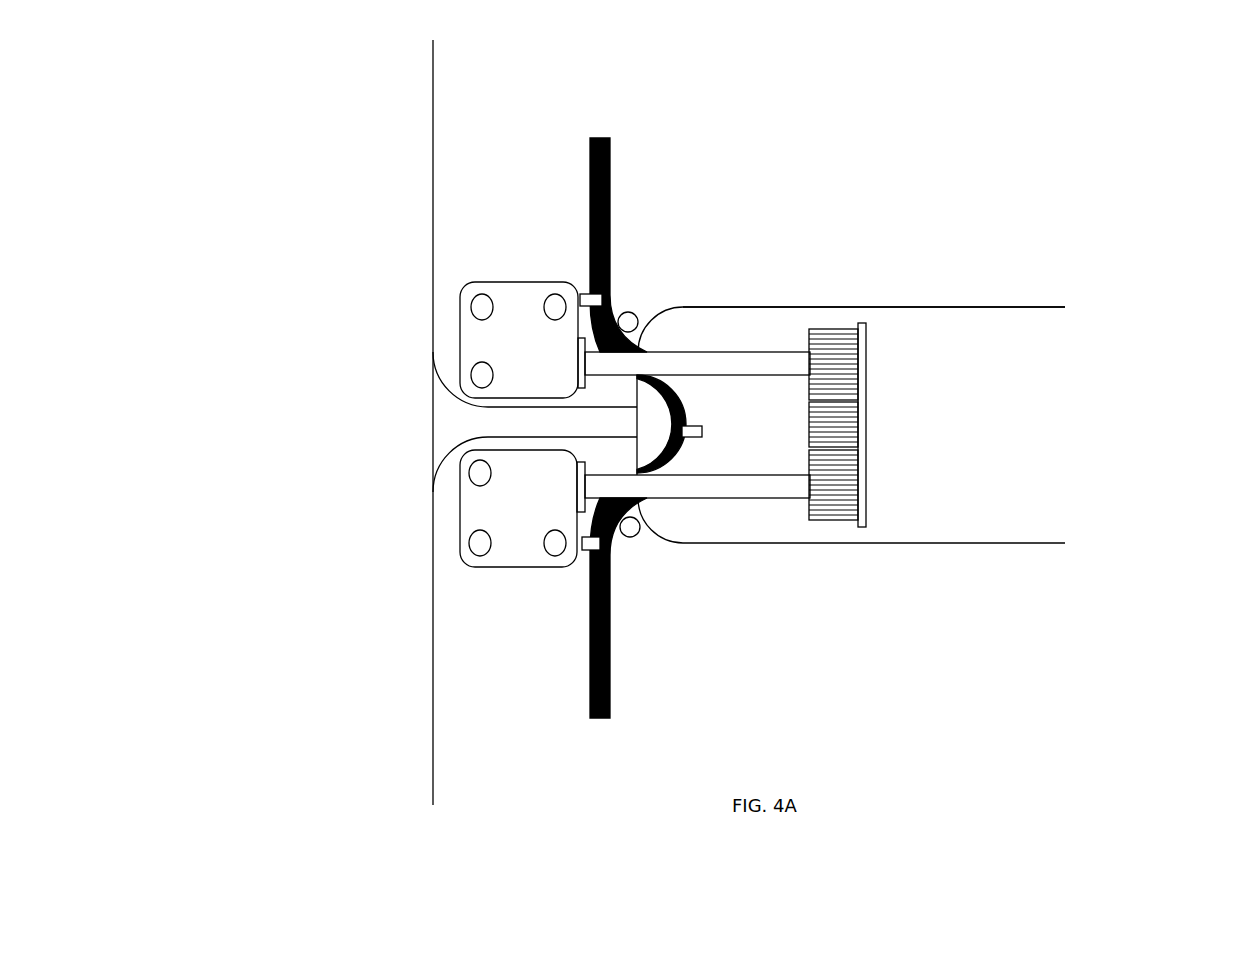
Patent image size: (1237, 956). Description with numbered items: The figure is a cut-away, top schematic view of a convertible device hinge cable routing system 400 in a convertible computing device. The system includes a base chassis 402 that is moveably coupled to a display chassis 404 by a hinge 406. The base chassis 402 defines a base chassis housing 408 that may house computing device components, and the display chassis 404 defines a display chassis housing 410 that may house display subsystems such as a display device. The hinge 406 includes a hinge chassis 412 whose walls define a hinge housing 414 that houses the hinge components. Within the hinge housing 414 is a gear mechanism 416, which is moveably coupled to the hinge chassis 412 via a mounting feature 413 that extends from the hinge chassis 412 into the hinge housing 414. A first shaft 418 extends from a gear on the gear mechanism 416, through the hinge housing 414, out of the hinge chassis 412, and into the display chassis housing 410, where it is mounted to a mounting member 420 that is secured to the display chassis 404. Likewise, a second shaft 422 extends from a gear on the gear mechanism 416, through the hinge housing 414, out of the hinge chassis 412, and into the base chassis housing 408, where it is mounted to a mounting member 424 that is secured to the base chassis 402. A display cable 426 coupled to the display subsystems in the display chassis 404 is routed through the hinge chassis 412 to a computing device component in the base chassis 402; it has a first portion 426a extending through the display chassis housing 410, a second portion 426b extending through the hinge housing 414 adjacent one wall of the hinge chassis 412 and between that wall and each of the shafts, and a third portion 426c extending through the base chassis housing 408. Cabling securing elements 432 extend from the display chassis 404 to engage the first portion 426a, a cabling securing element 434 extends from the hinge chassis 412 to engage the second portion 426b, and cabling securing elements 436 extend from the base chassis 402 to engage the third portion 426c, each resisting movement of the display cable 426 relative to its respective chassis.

The convertible device hinge cable routing system 400 is at (265, 122).
The base chassis 402 is at (432, 657).
The display chassis 404 is at (433, 197).
The hinge 406 is at (1075, 426).
The base chassis housing 408 is at (791, 689).
The display chassis housing 410 is at (791, 197).
The hinge chassis 412 is at (898, 307).
The mounting feature 413 is at (863, 425).
The hinge housing 414 is at (951, 429).
The gear mechanism 416 is at (830, 327).
The first shaft 418 is at (771, 360).
The mounting member 420 is at (515, 295).
The second shaft 422 is at (782, 488).
The mounting member 424 is at (517, 545).
The display cable 426 is at (634, 402).
The first portion 426a is at (593, 217).
The second portion 426b is at (690, 412).
The third portion 426c is at (612, 683).
The cabling securing elements 432 is at (583, 293).
The cabling securing element 434 is at (702, 428).
The cabling securing elements 436 is at (580, 552).